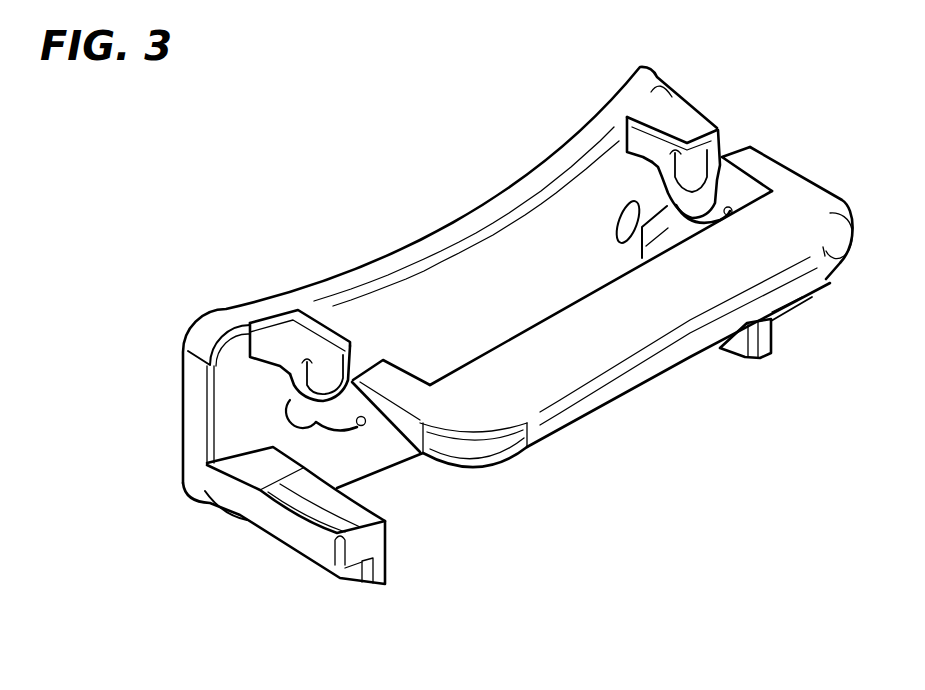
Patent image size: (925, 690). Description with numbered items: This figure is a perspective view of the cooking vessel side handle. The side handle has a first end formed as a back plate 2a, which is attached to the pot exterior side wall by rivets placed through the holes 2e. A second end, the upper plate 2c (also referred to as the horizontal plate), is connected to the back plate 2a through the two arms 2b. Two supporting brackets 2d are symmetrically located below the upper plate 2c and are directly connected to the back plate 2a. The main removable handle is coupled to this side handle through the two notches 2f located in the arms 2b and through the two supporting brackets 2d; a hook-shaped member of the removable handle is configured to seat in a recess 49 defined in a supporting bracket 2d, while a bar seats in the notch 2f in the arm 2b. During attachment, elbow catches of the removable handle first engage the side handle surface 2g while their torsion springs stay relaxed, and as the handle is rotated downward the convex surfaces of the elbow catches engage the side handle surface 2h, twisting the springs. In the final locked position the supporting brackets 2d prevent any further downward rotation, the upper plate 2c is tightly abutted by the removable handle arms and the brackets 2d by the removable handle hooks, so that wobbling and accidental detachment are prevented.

The back plate 2a is at (467, 222).
The arms 2b is at (297, 333).
The upper plate 2c is at (623, 320).
The supporting brackets 2d is at (367, 535).
The holes 2e is at (290, 403).
The notches 2f is at (335, 390).
The side handle surface 2g is at (615, 373).
The side handle surface 2h is at (550, 427).
The recess 49 is at (358, 567).